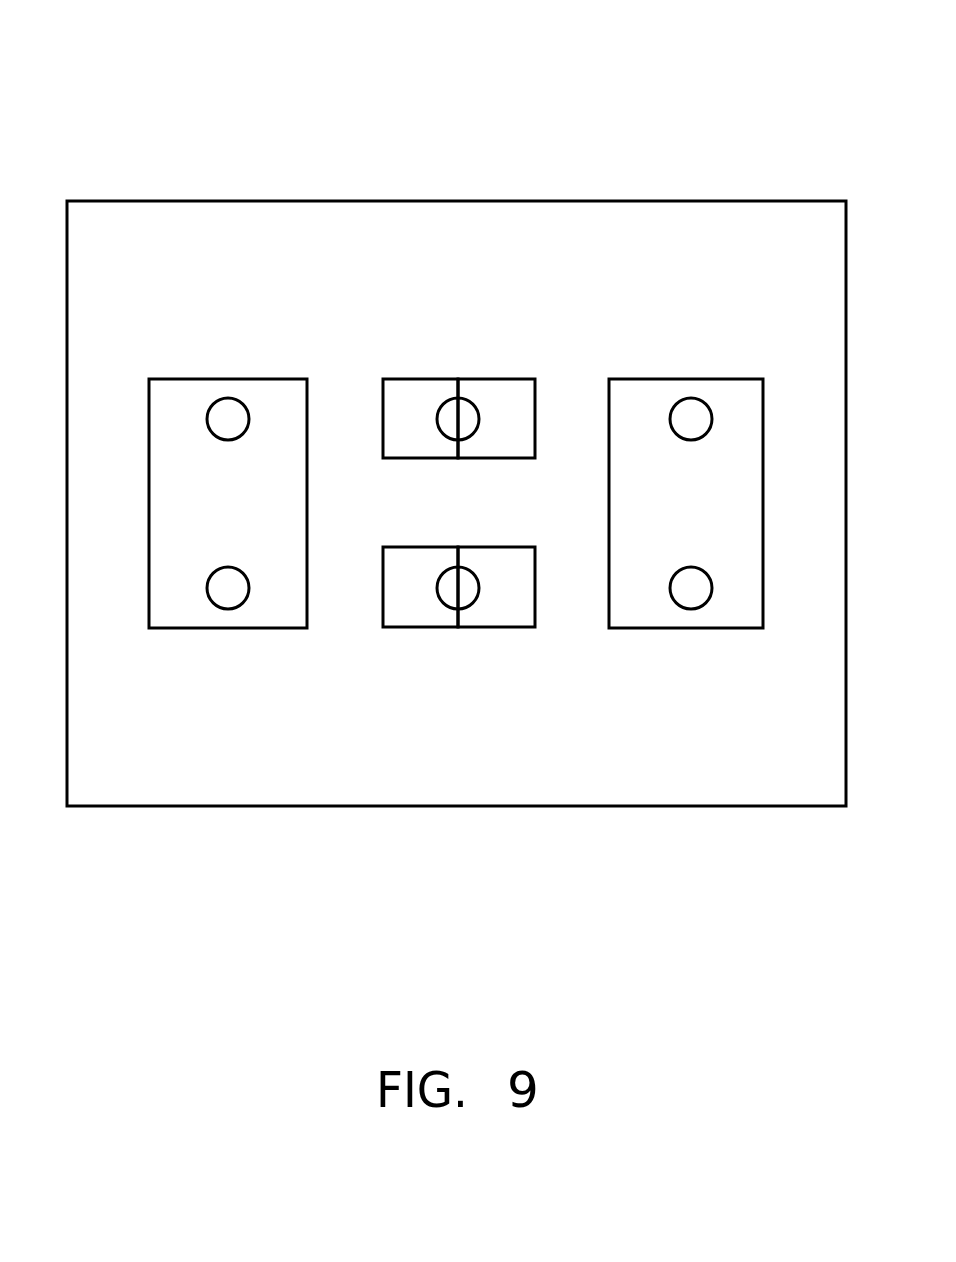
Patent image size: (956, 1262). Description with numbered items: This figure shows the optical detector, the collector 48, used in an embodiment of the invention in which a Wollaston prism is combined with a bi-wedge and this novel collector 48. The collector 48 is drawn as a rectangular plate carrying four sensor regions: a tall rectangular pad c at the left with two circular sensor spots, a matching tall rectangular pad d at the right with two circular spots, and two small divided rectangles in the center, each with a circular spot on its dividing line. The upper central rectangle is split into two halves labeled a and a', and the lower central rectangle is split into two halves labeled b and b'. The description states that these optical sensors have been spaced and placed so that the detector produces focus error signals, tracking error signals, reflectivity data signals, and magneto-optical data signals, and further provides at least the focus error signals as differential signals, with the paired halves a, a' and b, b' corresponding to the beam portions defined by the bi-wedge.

The collector 48 is at (170, 201).
The first slot half a is at (415, 343).
The first slot second half a' is at (515, 339).
The second slot half b is at (407, 664).
The second slot second half b' is at (522, 664).
The left pad with holes c is at (227, 379).
The right pad with holes d is at (687, 379).